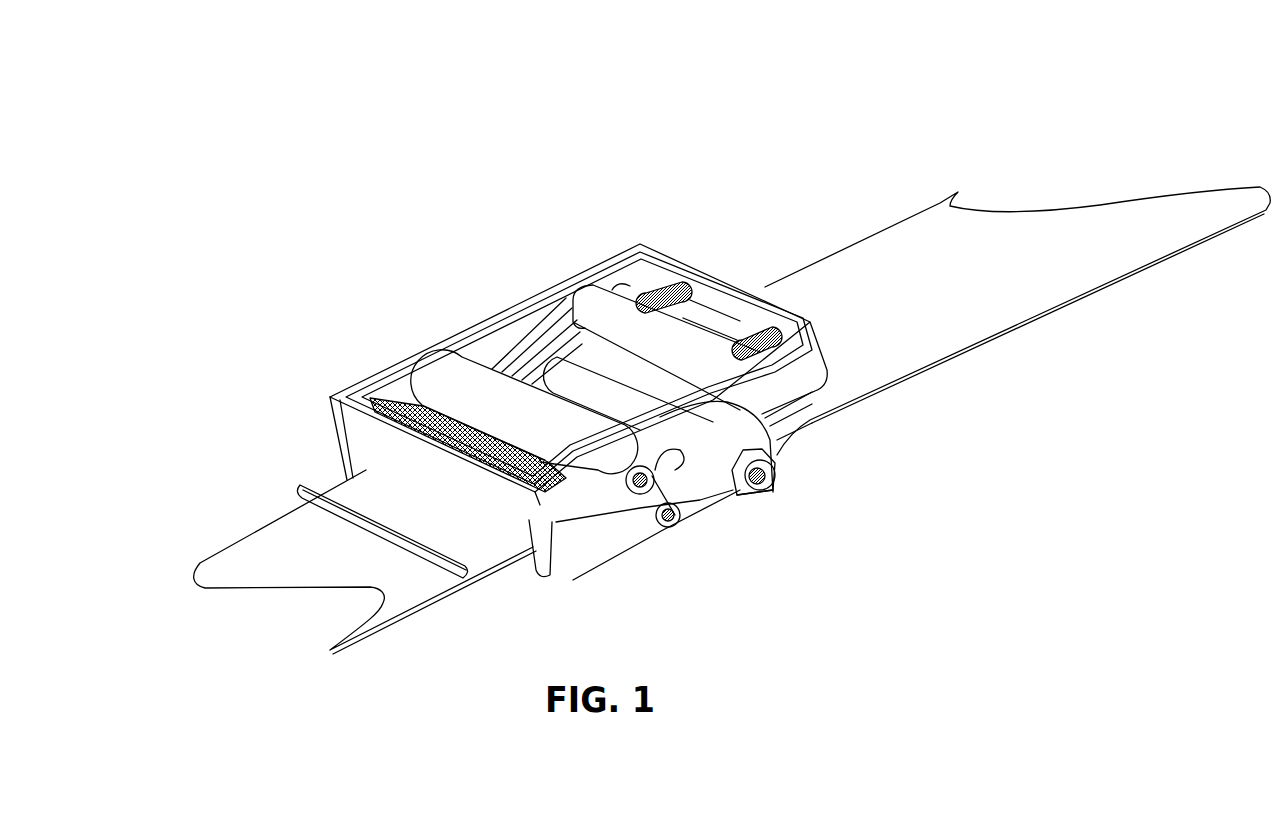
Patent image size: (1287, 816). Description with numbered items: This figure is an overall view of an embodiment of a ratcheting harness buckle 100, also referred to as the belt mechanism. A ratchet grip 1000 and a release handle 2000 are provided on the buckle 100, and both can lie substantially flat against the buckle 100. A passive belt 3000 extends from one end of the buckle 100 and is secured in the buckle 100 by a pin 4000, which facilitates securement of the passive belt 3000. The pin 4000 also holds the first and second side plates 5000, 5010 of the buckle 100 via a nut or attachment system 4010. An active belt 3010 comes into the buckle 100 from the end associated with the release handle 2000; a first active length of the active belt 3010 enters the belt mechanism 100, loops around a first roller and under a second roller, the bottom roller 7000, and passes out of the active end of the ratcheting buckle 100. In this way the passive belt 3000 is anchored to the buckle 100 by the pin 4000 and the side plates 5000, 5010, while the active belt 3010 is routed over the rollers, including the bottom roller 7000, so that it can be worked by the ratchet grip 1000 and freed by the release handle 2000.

The ratcheting harness buckle 100 is at (509, 190).
The ratchet grip 1000 is at (656, 231).
The release handle 2000 is at (355, 423).
The passive belt 3000 is at (963, 272).
The active belt 3010 is at (280, 562).
The pin 4000 is at (772, 490).
The nut or attachment system 4010 is at (740, 490).
The first side plate 5000 is at (617, 527).
The second side plate 5010 is at (355, 462).
The bottom roller 7000 is at (398, 407).